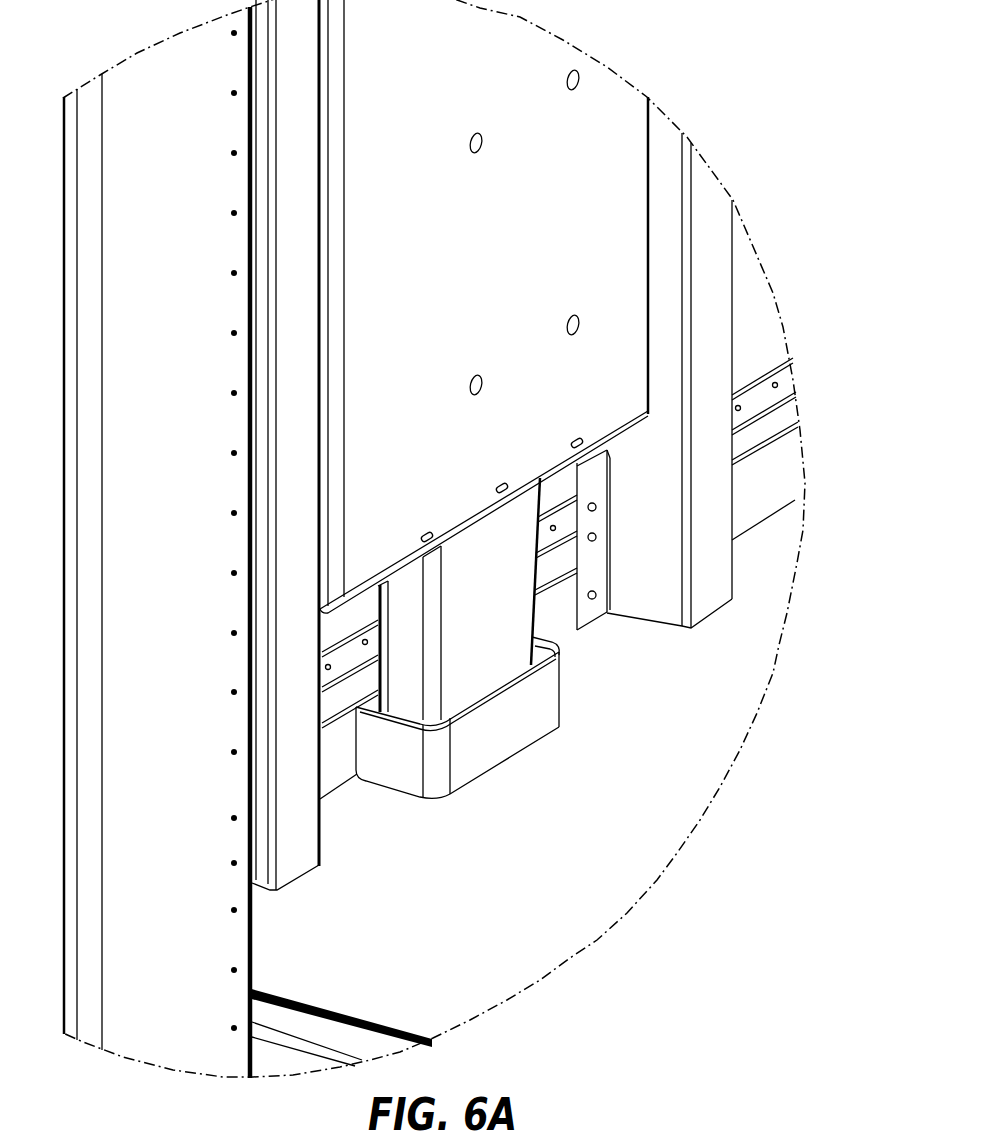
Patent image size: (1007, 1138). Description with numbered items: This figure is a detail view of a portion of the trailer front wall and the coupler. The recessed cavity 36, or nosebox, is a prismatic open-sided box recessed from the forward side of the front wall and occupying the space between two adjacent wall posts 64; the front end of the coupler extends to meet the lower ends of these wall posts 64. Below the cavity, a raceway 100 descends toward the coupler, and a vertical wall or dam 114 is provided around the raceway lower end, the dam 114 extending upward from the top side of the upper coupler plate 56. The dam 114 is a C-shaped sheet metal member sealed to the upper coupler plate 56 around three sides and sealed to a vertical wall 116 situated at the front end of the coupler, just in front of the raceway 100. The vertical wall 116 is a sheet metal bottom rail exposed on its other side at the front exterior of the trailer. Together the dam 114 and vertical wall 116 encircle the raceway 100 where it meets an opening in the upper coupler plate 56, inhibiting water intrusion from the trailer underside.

The recessed cavity 36 is at (573, 185).
The wall posts 64 is at (702, 312).
The raceway 100 is at (497, 620).
The dam 114 is at (493, 733).
The vertical wall 116 is at (333, 768).
The upper coupler plate 56 is at (523, 863).